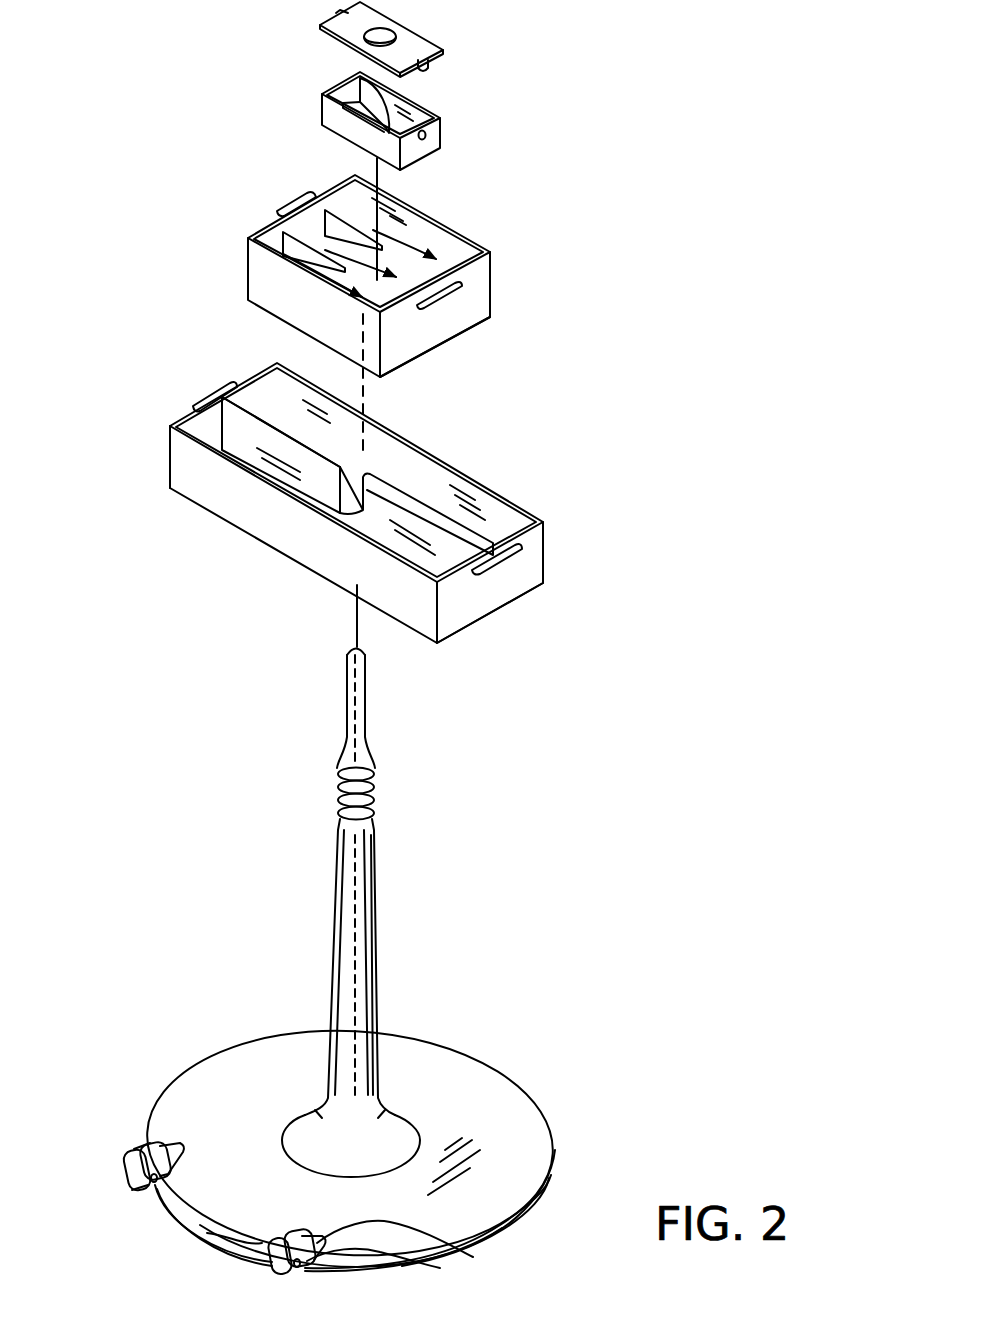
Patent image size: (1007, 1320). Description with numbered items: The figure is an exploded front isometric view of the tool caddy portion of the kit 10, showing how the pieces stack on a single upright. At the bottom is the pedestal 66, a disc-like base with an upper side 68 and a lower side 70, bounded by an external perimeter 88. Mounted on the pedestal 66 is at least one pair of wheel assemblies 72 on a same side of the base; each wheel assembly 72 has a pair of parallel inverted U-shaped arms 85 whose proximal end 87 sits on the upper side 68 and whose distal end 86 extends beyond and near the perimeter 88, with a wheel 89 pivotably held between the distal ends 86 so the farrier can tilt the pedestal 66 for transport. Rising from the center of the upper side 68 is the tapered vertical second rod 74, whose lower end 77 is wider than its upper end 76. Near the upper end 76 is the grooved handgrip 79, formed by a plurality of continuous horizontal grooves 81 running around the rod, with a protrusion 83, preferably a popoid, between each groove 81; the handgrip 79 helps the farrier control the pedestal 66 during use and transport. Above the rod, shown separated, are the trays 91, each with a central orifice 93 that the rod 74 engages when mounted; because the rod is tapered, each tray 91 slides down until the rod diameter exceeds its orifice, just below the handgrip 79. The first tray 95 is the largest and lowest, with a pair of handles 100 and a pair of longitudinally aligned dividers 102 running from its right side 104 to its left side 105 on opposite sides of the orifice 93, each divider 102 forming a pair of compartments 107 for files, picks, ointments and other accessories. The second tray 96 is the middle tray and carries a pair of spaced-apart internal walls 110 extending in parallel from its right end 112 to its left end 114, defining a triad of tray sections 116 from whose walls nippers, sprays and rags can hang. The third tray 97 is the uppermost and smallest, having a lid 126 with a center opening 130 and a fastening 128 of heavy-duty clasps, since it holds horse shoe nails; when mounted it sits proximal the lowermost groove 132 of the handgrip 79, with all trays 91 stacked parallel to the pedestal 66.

The kit 10 is at (660, 310).
The pedestal 66 is at (507, 1070).
The upper side 68 is at (510, 1110).
The lower side 70 is at (550, 1173).
The wheel assemblies 72 is at (322, 1271).
The second rod 74 is at (366, 933).
The upper end 76 is at (366, 648).
The lower end 77 is at (420, 1137).
The grooved handgrip 79 is at (388, 757).
The grooves 81 is at (337, 790).
The protrusion 83 is at (335, 794).
The inverted U-shaped arms 85 is at (470, 1253).
The distal end 86 is at (283, 1261).
The proximal end 87 is at (410, 1266).
The external perimeter 88 is at (522, 1213).
The wheel 89 is at (217, 1230).
The trays 91 is at (322, 172).
The central orifice 93 is at (314, 91).
The first tray 95 is at (252, 396).
The second tray 96 is at (356, 177).
The third tray 97 is at (440, 134).
The handles 100 is at (200, 398).
The dividers 102 is at (170, 428).
The right side 104 is at (487, 608).
The left side 105 is at (245, 392).
The compartments 107 is at (330, 428).
The internal walls 110 is at (284, 230).
The right end 112 is at (422, 330).
The left end 114 is at (280, 206).
The tray sections 116 is at (322, 280).
The lid 126 is at (428, 62).
The fastening 128 is at (426, 133).
The center opening 130 is at (397, 22).
The lowermost groove 132 is at (364, 833).